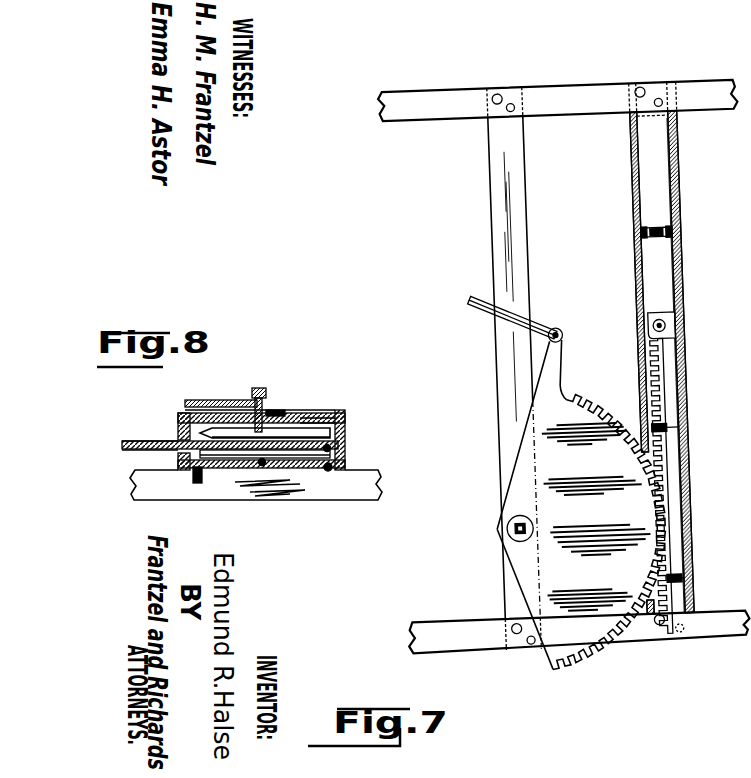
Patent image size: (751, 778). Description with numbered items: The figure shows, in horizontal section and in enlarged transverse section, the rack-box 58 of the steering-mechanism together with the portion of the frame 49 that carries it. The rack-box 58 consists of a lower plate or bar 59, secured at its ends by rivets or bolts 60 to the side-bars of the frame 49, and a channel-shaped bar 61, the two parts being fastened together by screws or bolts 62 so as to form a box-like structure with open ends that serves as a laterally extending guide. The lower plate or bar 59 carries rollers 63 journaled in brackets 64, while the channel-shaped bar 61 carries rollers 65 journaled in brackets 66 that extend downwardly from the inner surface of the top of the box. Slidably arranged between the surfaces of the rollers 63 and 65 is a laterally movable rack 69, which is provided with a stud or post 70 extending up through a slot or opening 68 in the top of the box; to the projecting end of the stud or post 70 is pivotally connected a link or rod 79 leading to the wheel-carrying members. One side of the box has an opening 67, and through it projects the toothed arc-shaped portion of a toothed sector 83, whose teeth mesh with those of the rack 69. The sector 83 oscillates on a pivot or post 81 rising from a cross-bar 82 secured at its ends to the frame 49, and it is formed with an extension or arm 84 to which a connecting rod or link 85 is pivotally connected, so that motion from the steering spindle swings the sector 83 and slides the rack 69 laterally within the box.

In FIG. 7, the frame 49 is at (430, 97).
In FIG. 8, the frame 49 is at (363, 478).
In FIG. 7, the rack-box 58 is at (685, 361).
In FIG. 8, the rack-box 58 is at (178, 427).
In FIG. 7, the lower plate or bar 59 is at (645, 173).
In FIG. 8, the lower plate or bar 59 is at (233, 445).
In FIG. 7, the rivets or bolts 60 is at (657, 99).
In FIG. 7, the channel-shaped bar 61 is at (682, 203).
In FIG. 8, the channel-shaped bar 61 is at (348, 423).
In FIG. 8, the screws or bolts 62 is at (192, 477).
In FIG. 7, the rollers 63 is at (648, 234).
In FIG. 8, the rollers 63 is at (302, 470).
In FIG. 7, the brackets 64 is at (645, 240).
In FIG. 8, the brackets 64 is at (347, 448).
In FIG. 8, the rollers 65 is at (307, 418).
In FIG. 8, the brackets 66 is at (207, 418).
In FIG. 7, the opening 67 is at (641, 432).
In FIG. 8, the opening 67 is at (173, 455).
In FIG. 8, the slot or opening 68 is at (278, 410).
In FIG. 7, the rack 69 is at (672, 379).
In FIG. 8, the rack 69 is at (350, 437).
In FIG. 7, the stud or post 70 is at (669, 328).
In FIG. 8, the stud or post 70 is at (248, 400).
In FIG. 8, the link or rod 79 is at (205, 400).
In FIG. 7, the pivot or post 81 is at (507, 538).
In FIG. 7, the cross-bar 82 is at (519, 132).
In FIG. 7, the toothed sector 83 is at (553, 630).
In FIG. 7, the extension or arm 84 is at (555, 362).
In FIG. 7, the connecting rod or link 85 is at (470, 298).